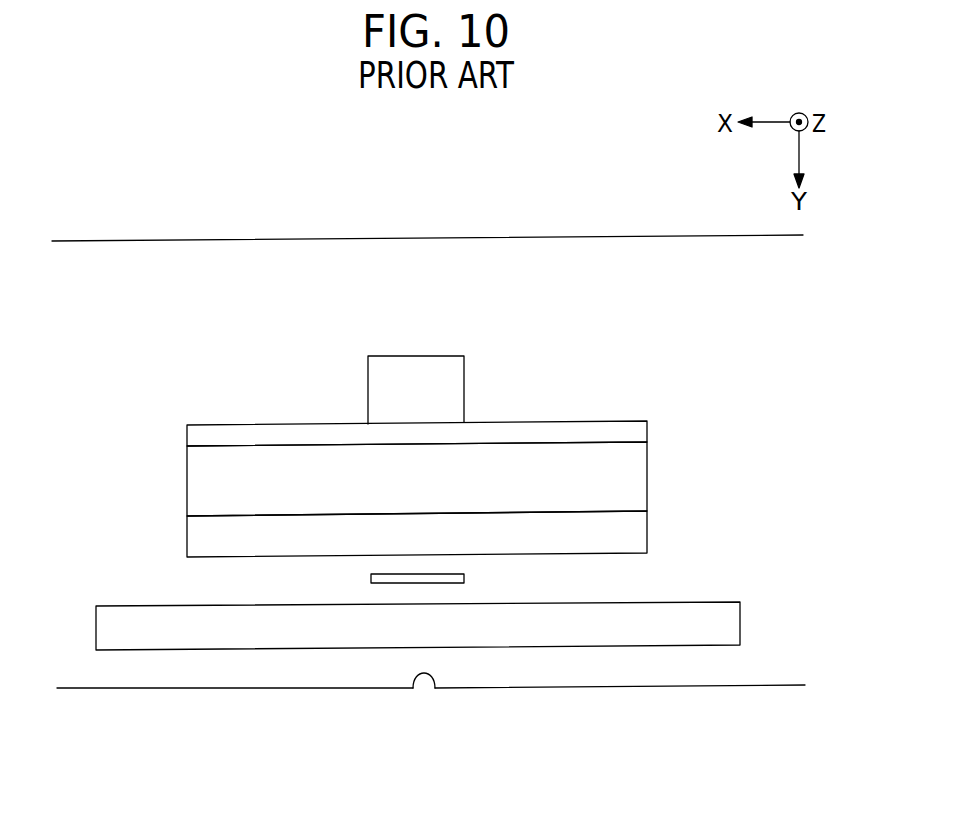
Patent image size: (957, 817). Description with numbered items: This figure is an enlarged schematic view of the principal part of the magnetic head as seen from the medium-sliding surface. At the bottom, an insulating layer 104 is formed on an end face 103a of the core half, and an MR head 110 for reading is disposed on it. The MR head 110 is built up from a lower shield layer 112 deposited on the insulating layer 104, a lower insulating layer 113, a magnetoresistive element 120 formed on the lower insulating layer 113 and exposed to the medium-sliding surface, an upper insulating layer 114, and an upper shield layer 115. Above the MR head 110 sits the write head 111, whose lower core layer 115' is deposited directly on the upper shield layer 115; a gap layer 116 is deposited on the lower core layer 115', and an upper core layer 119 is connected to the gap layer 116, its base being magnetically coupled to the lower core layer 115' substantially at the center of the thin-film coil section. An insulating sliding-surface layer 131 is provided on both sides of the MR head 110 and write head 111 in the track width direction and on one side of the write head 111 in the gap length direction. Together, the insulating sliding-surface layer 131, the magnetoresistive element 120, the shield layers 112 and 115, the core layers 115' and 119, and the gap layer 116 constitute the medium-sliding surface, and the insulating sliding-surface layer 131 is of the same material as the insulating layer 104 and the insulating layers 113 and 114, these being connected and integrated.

The insulating sliding-surface layer 131 is at (212, 268).
The upper core layer 119 is at (422, 380).
The gap layer 116 is at (636, 431).
The lower core layer 115' is at (469, 479).
The upper shield layer 115 is at (466, 534).
The write head 111 is at (350, 422).
The upper insulating layer 114 is at (640, 574).
The lower shield layer 112 is at (187, 632).
The lower insulating layer 113 is at (346, 595).
The magnetoresistive element 120 is at (457, 583).
The MR head 110 is at (660, 631).
The end face 103a is at (435, 688).
The insulating layer 104 is at (587, 668).